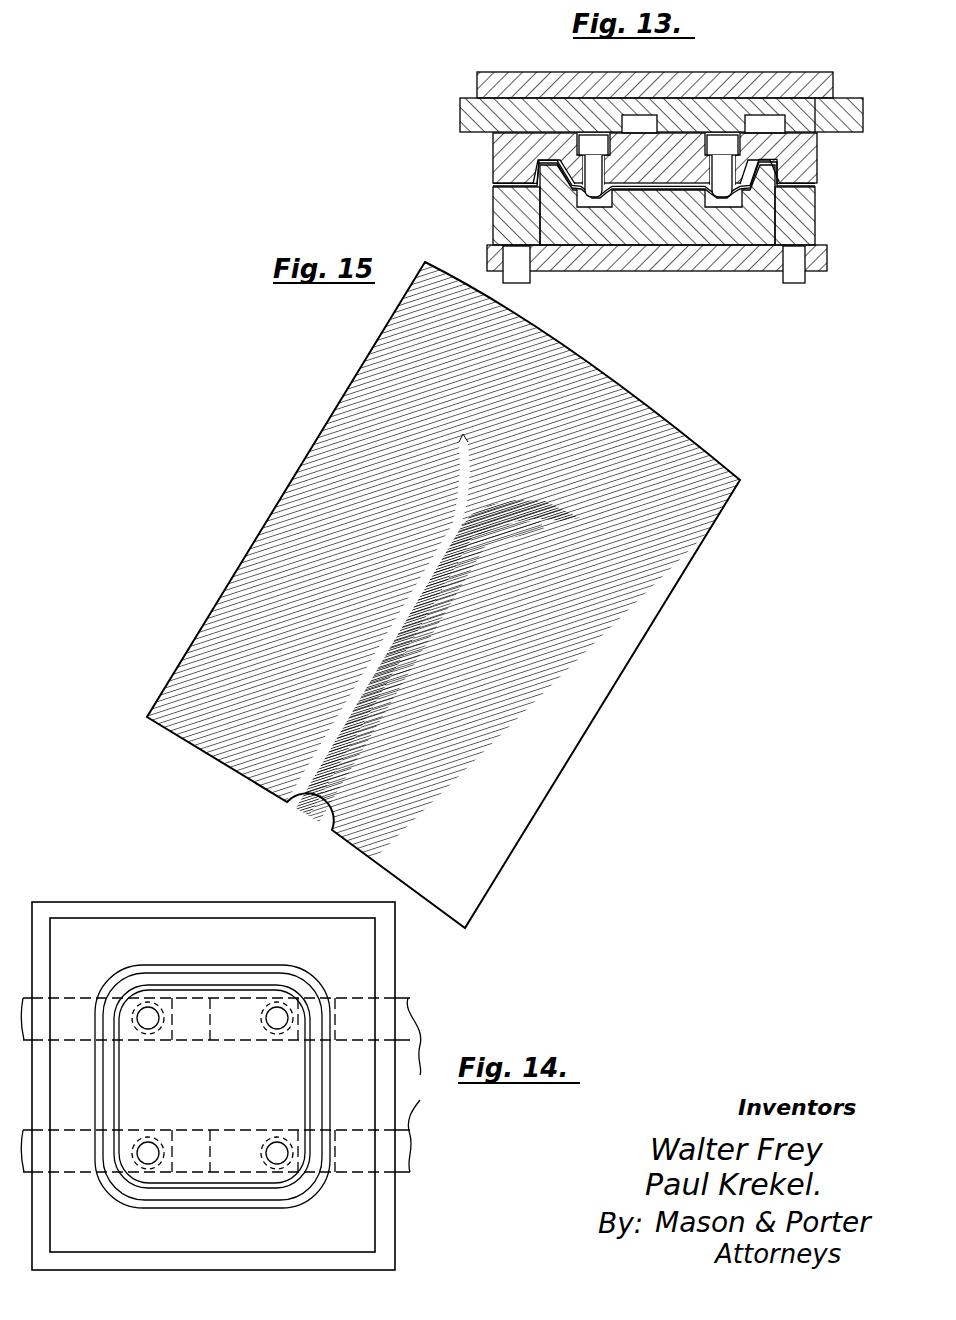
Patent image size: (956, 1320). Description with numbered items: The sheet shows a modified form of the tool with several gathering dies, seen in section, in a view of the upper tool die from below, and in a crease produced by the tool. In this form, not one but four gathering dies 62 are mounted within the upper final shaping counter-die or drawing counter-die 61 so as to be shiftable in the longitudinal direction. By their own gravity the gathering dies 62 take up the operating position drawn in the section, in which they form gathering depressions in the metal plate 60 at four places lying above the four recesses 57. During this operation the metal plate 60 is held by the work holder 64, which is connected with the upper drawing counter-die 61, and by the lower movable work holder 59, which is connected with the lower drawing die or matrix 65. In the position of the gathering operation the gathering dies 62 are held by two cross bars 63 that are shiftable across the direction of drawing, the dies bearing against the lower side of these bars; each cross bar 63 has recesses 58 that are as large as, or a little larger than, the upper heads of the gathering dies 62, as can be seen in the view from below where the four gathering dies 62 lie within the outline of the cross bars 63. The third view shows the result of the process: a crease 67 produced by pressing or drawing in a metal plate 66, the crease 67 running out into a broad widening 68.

In FIG. 13, the recess 57 is at (735, 200).
In FIG. 13, the recess of the cross bar 58 is at (643, 115).
In FIG. 13, the lower movable work holder 59 is at (800, 229).
In FIG. 13, the metal plate 60 is at (527, 185).
In FIG. 13, the upper drawing counter-die 61 is at (488, 88).
In FIG. 13, the gathering die 62 is at (590, 137).
In FIG. 14, the gathering die 62 is at (145, 1020).
In FIG. 13, the cross bar 63 is at (818, 121).
In FIG. 14, the cross bar 63 is at (230, 1085).
In FIG. 13, the work holder 64 is at (510, 174).
In FIG. 13, the lower drawing die 65 is at (740, 233).
In FIG. 15, the metal plate 66 is at (443, 595).
In FIG. 15, the crease 67 is at (313, 780).
In FIG. 15, the broad widening 68 is at (562, 520).